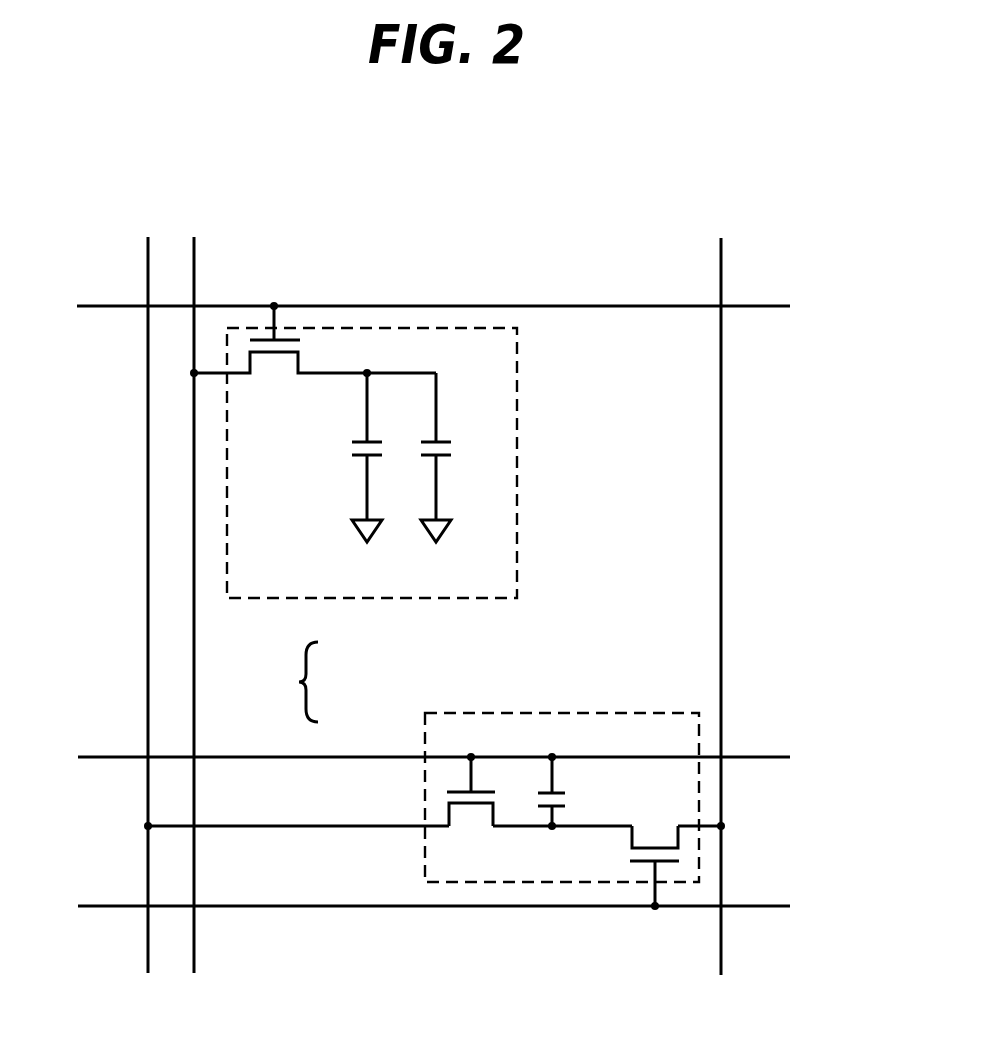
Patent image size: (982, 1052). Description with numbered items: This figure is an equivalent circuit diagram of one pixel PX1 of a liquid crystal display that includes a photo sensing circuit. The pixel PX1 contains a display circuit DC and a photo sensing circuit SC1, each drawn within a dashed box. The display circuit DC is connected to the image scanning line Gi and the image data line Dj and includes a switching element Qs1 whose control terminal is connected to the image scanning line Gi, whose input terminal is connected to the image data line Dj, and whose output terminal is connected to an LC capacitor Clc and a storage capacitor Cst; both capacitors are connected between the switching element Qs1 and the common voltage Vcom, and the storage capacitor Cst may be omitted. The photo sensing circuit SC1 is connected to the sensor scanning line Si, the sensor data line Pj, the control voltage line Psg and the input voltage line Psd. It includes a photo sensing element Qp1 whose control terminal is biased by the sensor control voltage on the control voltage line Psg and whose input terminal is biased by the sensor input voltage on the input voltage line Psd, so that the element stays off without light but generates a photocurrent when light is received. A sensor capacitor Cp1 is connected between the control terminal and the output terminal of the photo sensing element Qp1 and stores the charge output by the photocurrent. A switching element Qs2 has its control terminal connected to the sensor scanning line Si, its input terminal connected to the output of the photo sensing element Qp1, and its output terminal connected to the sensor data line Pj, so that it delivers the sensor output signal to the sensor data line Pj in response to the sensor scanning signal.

The image scanning line Gi is at (416, 298).
The image data line Dj is at (195, 585).
The input voltage line Psd is at (157, 625).
The sensor data line Pj is at (735, 629).
The control voltage line Psg is at (471, 761).
The sensor scanning line Si is at (459, 912).
The switching element Qs1 is at (313, 357).
The LC capacitor Clc is at (342, 455).
The storage capacitor Cst is at (464, 457).
The common voltage Vcom is at (389, 565).
The pixel PX1 is at (280, 682).
The display circuit DC is at (392, 598).
The photo sensing circuit SC1 is at (425, 735).
The photo sensing element Qp1 is at (471, 812).
The sensor capacitor Cp1 is at (579, 791).
The switching element Qs2 is at (656, 849).